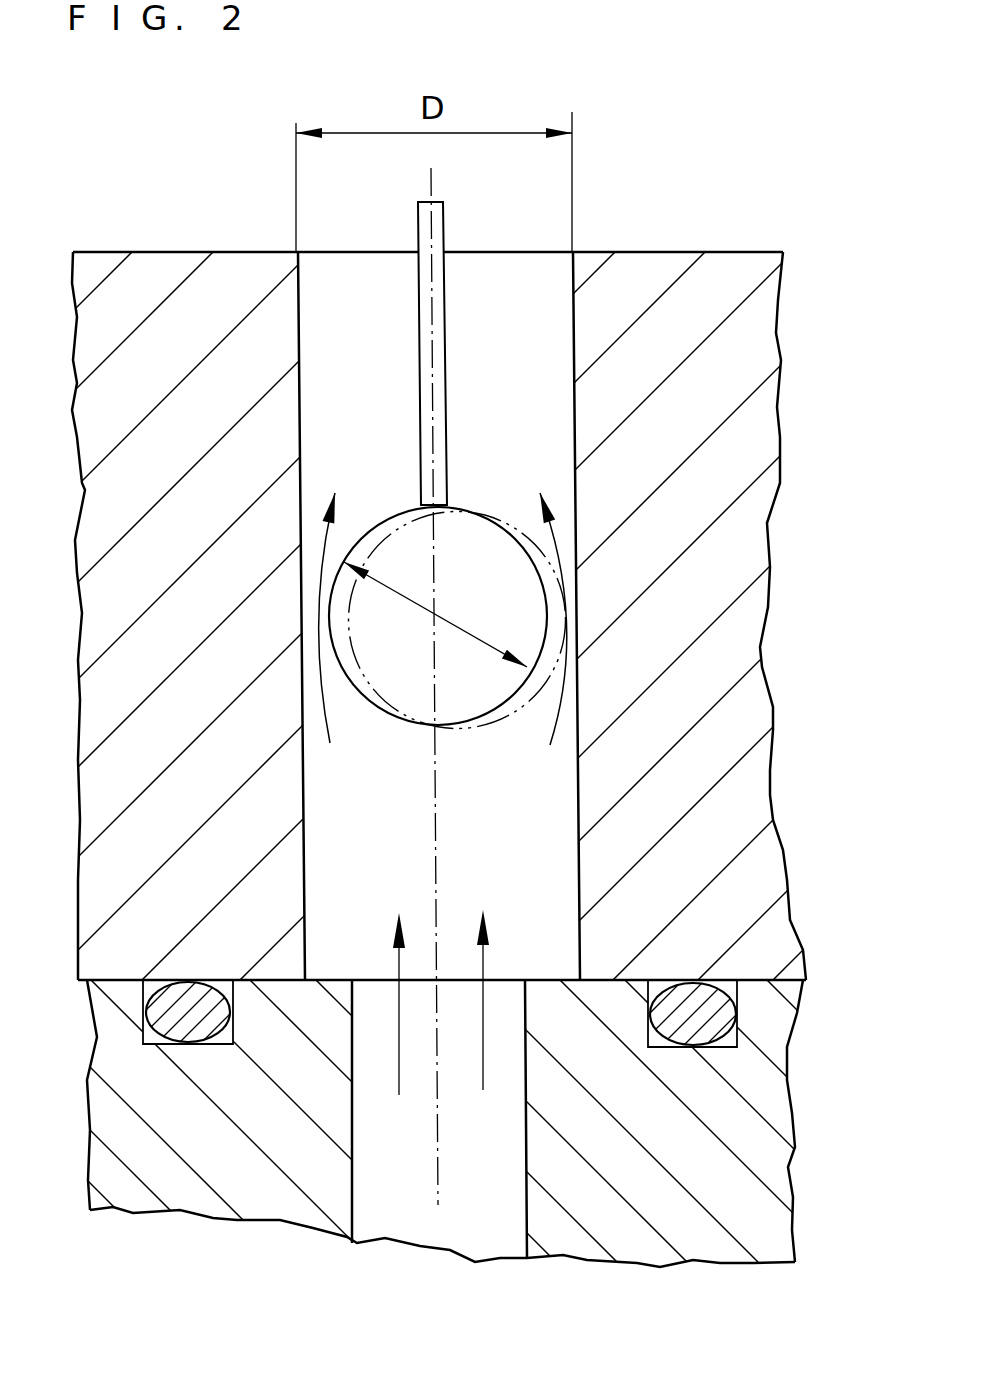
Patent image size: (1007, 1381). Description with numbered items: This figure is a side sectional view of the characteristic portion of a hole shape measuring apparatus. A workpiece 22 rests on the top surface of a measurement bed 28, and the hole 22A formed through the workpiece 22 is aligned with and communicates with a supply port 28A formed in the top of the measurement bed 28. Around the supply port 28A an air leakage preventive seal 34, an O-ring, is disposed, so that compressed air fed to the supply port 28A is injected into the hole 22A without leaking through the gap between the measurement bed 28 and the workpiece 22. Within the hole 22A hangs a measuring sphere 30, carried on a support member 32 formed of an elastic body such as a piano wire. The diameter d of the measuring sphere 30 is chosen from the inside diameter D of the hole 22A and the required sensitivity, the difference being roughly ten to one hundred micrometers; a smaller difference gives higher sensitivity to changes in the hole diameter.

The workpiece 22 is at (170, 268).
The hole 22A is at (298, 274).
The support member 32 is at (449, 348).
The measuring sphere 30 is at (358, 694).
The measurement bed 28 is at (287, 1160).
The supply port 28A is at (522, 980).
The air leakage preventive seal 34 is at (187, 1033).